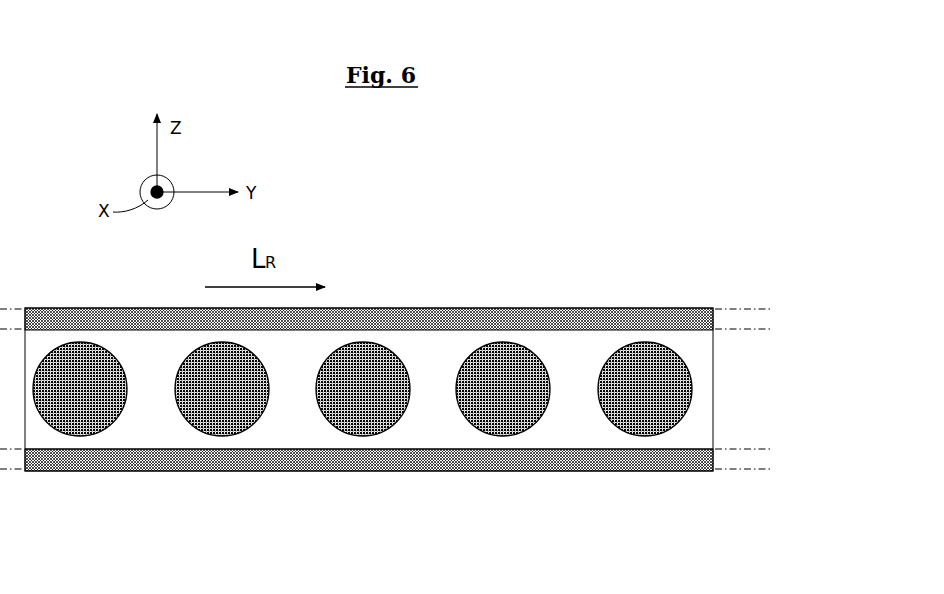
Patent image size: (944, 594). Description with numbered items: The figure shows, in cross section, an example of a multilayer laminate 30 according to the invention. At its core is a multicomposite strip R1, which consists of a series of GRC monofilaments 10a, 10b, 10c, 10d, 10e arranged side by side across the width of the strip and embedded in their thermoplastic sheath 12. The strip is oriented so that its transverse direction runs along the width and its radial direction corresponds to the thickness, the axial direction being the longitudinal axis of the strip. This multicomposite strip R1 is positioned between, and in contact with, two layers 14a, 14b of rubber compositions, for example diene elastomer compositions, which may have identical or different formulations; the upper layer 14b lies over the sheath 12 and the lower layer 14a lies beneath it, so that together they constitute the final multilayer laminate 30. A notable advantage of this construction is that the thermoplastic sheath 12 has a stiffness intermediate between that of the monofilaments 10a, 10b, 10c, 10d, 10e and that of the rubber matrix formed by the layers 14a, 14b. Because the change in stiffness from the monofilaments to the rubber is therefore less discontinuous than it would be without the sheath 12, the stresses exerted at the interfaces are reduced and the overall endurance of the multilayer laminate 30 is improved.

The multilayer laminate 30 is at (428, 246).
The GRC monofilament 10a is at (67, 345).
The GRC monofilament 10b is at (200, 345).
The GRC monofilament 10c is at (372, 345).
The GRC monofilament 10d is at (512, 343).
The GRC monofilament 10e is at (652, 343).
The thermoplastic sheath 12 is at (293, 418).
The layer of rubber composition 14a is at (554, 460).
The layer of rubber composition 14b is at (571, 318).
The multicomposite strip R1 is at (147, 451).